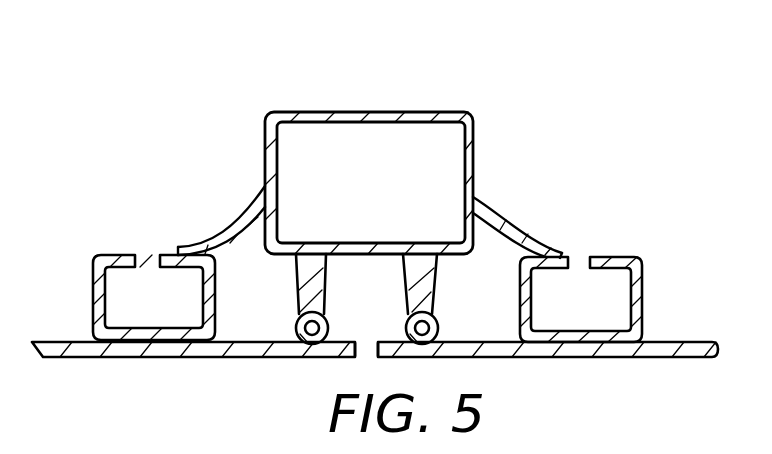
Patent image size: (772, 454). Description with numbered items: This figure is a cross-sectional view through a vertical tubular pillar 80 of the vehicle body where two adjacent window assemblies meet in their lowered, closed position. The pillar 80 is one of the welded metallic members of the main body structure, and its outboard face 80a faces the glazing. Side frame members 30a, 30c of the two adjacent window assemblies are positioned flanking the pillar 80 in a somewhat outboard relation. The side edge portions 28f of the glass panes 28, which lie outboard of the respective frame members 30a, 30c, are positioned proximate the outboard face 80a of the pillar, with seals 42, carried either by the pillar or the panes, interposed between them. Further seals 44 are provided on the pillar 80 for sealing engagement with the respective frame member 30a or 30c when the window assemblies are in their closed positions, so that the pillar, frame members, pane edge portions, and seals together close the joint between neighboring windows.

The glass pane 28 is at (92, 357).
The side edge portions of the panes 28f is at (205, 357).
The side frame member 30a is at (112, 254).
The side frame member 30c is at (637, 260).
The vertical tubular pillar 80 is at (306, 112).
The outboard face of the pillar 80a is at (352, 268).
The seals 44 is at (500, 214).
The seals 42 is at (443, 320).